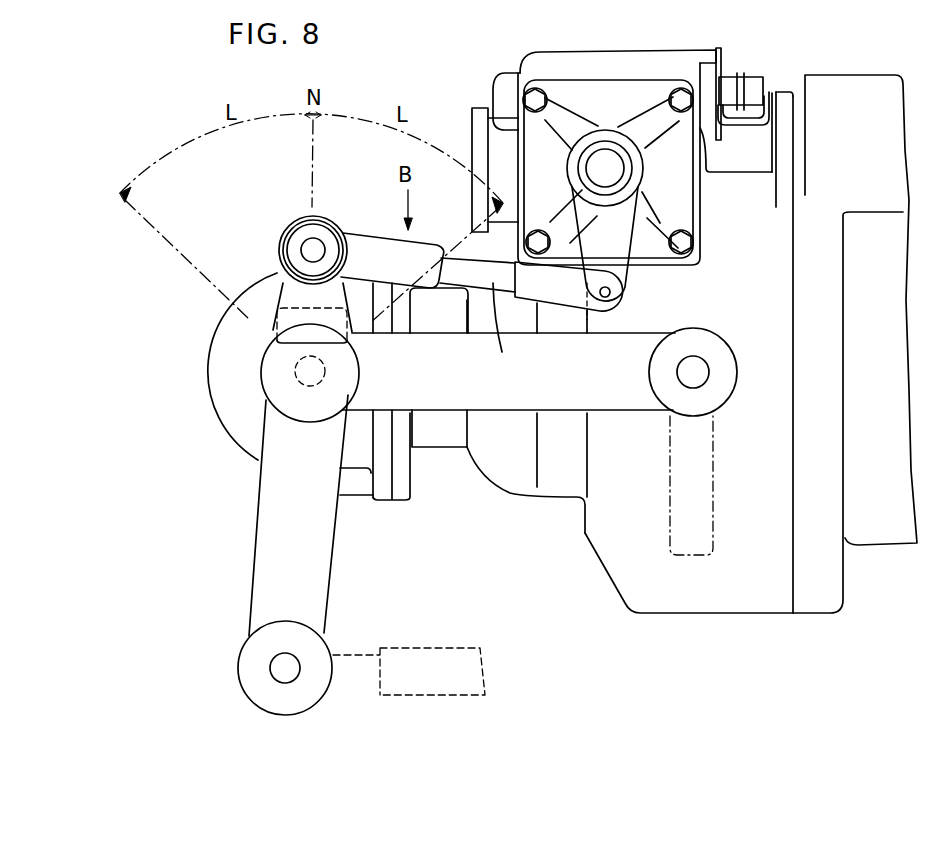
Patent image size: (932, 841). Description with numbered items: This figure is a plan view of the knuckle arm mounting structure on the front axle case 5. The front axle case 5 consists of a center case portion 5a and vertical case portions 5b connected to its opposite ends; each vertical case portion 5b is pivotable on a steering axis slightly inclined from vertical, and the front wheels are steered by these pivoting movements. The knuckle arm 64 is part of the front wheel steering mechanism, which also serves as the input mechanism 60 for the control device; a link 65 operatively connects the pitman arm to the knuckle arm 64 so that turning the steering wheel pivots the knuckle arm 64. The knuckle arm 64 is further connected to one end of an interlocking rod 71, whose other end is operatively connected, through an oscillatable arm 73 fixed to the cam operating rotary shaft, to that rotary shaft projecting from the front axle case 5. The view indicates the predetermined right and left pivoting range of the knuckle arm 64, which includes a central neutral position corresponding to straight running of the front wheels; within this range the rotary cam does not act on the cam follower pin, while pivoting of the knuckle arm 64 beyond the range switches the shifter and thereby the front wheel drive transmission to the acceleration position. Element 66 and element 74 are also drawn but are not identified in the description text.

The front axle case 5 is at (651, 614).
The center case portion 5a is at (752, 598).
The vertical case portion 5b is at (237, 429).
The input mechanism 60 is at (729, 327).
The knuckle arm 64 is at (272, 372).
The link 65 is at (670, 513).
The stopper block 66 is at (440, 648).
The interlocking rod 71 is at (527, 332).
The oscillatable arm 73 is at (613, 224).
The actuator shaft hub 74 is at (612, 168).